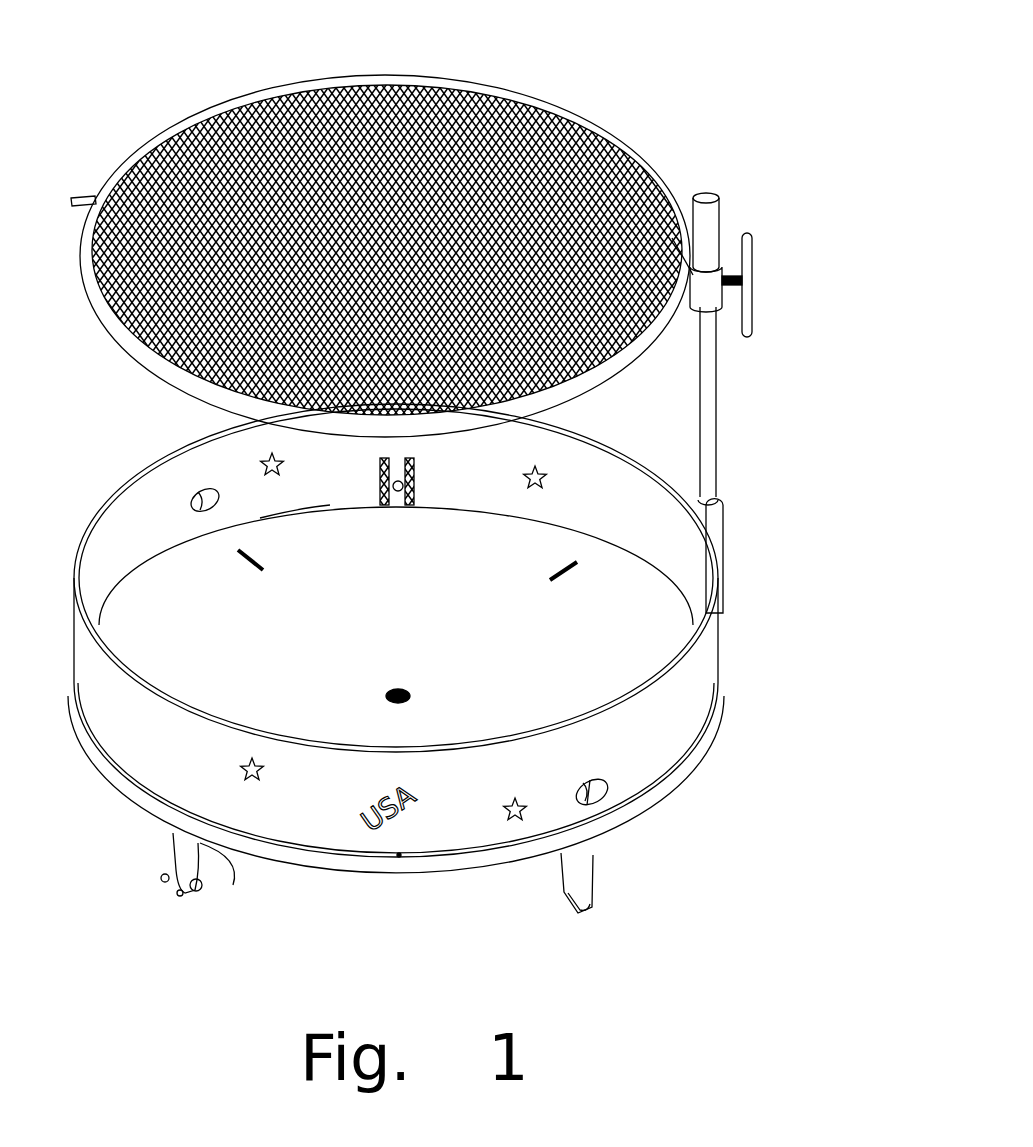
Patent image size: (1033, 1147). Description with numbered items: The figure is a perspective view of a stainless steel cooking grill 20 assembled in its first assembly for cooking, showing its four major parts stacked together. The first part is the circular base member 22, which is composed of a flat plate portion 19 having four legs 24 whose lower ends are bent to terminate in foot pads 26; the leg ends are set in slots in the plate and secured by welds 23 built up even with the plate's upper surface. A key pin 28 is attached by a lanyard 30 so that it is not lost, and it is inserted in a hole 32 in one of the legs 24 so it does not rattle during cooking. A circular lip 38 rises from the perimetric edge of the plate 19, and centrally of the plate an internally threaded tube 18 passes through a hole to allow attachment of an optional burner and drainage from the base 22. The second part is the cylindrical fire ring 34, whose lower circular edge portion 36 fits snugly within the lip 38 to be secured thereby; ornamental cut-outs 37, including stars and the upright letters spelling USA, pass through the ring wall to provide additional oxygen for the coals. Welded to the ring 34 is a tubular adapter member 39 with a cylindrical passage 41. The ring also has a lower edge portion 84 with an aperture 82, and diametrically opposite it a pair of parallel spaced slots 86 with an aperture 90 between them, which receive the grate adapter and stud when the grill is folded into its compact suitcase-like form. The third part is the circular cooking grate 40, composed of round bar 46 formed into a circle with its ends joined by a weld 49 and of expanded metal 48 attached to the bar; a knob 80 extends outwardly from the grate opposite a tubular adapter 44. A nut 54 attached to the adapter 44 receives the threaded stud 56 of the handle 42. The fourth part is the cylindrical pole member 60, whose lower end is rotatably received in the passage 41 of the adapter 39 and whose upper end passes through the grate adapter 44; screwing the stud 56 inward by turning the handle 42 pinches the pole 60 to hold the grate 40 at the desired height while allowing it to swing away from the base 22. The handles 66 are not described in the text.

The internally threaded tube 18 is at (410, 698).
The flat plate portion 19 is at (412, 646).
The cooking grill 20 is at (651, 95).
The circular base member 22 is at (645, 822).
The welds 23 is at (245, 575).
The legs 24 is at (170, 845).
The foot pads 26 is at (172, 893).
The key pin 28 is at (162, 878).
The lanyard 30 is at (233, 882).
The hole 32 is at (178, 898).
The fire ring 34 is at (697, 678).
The lower circular edge portion 36 is at (555, 525).
The cut-outs 37 is at (257, 758).
The lip 38 is at (692, 758).
The tubular adapter member 39 is at (717, 528).
The cooking grate 40 is at (493, 95).
The cylindrical passage 41 is at (720, 490).
The handle 42 is at (753, 324).
The tubular adapter 44 is at (700, 300).
The round bar 46 is at (150, 368).
The expanded metal 48 is at (383, 95).
The weld 49 is at (655, 215).
The nut 54 is at (730, 272).
The threaded stud 56 is at (742, 277).
The pole member 60 is at (712, 217).
The handles 66 is at (192, 506).
The knob 80 is at (82, 196).
The aperture 82 is at (398, 857).
The lower edge portion 84 is at (290, 504).
The slots 86 is at (380, 470).
The aperture 90 is at (398, 495).